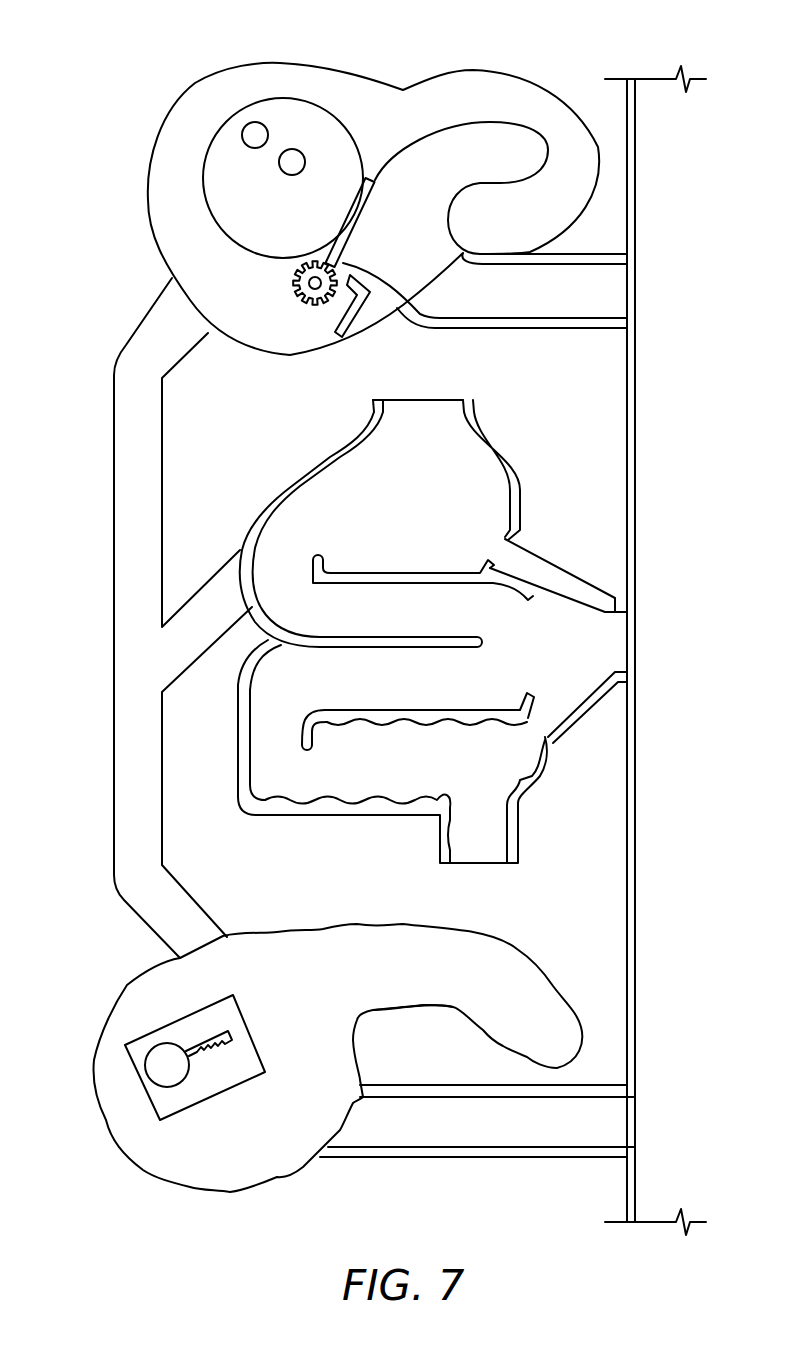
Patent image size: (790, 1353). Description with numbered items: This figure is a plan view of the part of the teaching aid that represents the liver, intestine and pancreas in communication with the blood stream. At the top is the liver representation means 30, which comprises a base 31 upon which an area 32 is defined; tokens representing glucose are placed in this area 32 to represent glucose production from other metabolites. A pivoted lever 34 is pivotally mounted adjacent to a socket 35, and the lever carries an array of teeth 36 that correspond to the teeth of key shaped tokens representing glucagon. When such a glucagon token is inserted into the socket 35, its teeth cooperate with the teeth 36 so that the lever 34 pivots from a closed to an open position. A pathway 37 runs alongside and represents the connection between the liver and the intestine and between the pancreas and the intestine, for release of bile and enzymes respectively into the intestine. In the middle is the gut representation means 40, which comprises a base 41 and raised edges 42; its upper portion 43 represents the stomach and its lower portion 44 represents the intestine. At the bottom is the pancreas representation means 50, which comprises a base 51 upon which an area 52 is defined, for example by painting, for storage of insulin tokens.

The liver representation means 30 is at (130, 140).
The base 31 is at (488, 95).
The area 32 is at (283, 178).
The pivoted lever 34 is at (350, 238).
The socket 35 is at (335, 313).
The array of teeth 36 is at (308, 306).
The pathway 37 is at (136, 372).
The gut representation means 40 is at (560, 479).
The base 41 is at (440, 458).
The raised edges 42 is at (500, 452).
The upper portion 43 is at (492, 565).
The lower portion 44 is at (446, 709).
The pancreas representation means 50 is at (566, 967).
The base 51 is at (410, 990).
The area 52 is at (212, 1080).